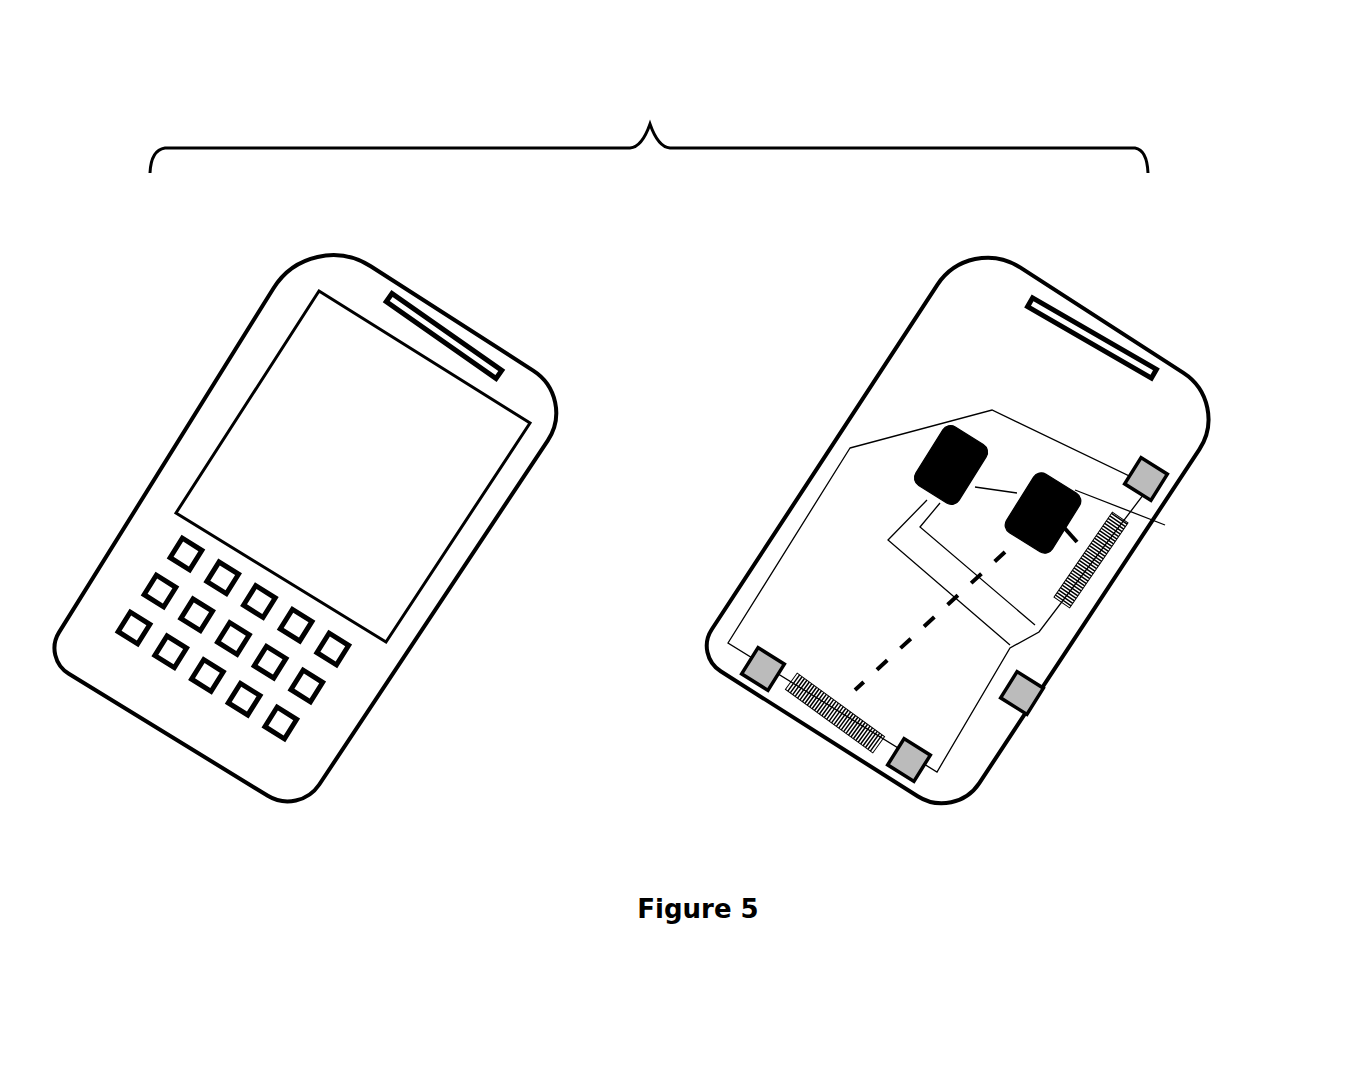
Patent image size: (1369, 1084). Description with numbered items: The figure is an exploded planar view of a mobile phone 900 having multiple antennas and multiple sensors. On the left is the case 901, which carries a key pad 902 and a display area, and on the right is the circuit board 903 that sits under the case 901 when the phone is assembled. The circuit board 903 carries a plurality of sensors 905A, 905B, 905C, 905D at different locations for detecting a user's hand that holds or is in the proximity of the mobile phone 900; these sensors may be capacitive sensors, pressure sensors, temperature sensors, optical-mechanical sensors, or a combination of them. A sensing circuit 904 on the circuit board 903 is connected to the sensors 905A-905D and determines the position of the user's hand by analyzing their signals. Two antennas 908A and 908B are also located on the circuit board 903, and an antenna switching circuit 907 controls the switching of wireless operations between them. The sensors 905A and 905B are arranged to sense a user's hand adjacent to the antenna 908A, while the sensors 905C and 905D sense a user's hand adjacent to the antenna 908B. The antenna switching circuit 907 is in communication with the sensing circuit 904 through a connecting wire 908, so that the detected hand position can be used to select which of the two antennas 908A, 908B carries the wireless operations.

The mobile phone 900 is at (649, 128).
The case 901 is at (327, 273).
The key pad 902 is at (150, 564).
The circuit board 903 is at (982, 275).
The sensing circuit 904 is at (935, 440).
The sensor 905A is at (903, 757).
The sensor 905B is at (745, 683).
The sensor 905C is at (1162, 477).
The sensor 905D is at (1037, 708).
The antenna switching circuit 907 is at (1067, 487).
The connecting wire 908 is at (995, 487).
The antenna 908A is at (830, 718).
The antenna 908B is at (1093, 573).